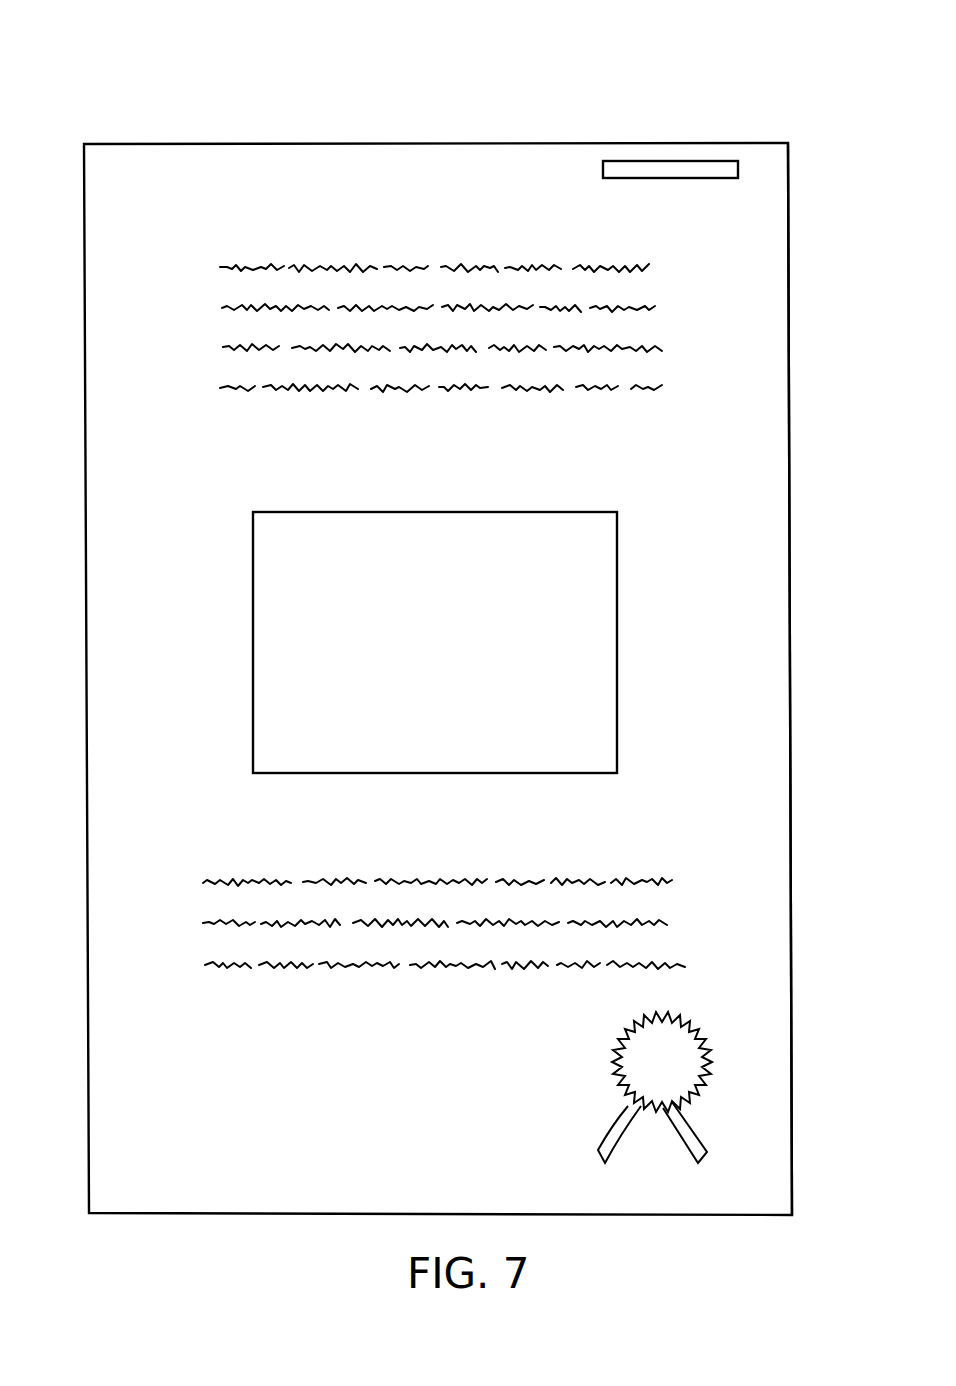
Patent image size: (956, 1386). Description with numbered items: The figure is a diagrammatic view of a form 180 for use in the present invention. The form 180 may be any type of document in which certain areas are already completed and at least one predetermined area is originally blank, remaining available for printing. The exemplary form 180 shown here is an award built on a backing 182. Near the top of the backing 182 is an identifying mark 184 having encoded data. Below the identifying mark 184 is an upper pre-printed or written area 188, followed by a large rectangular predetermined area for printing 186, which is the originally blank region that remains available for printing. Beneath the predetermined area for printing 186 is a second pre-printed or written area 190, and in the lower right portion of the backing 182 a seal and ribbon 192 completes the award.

The form 180 is at (131, 120).
The backing 182 is at (758, 320).
The identifying mark 184 is at (703, 165).
The predetermined area for printing 186 is at (593, 535).
The pre-printed or written area 188 is at (184, 358).
The pre-printed or written area 190 is at (184, 944).
The seal and ribbon 192 is at (660, 1057).